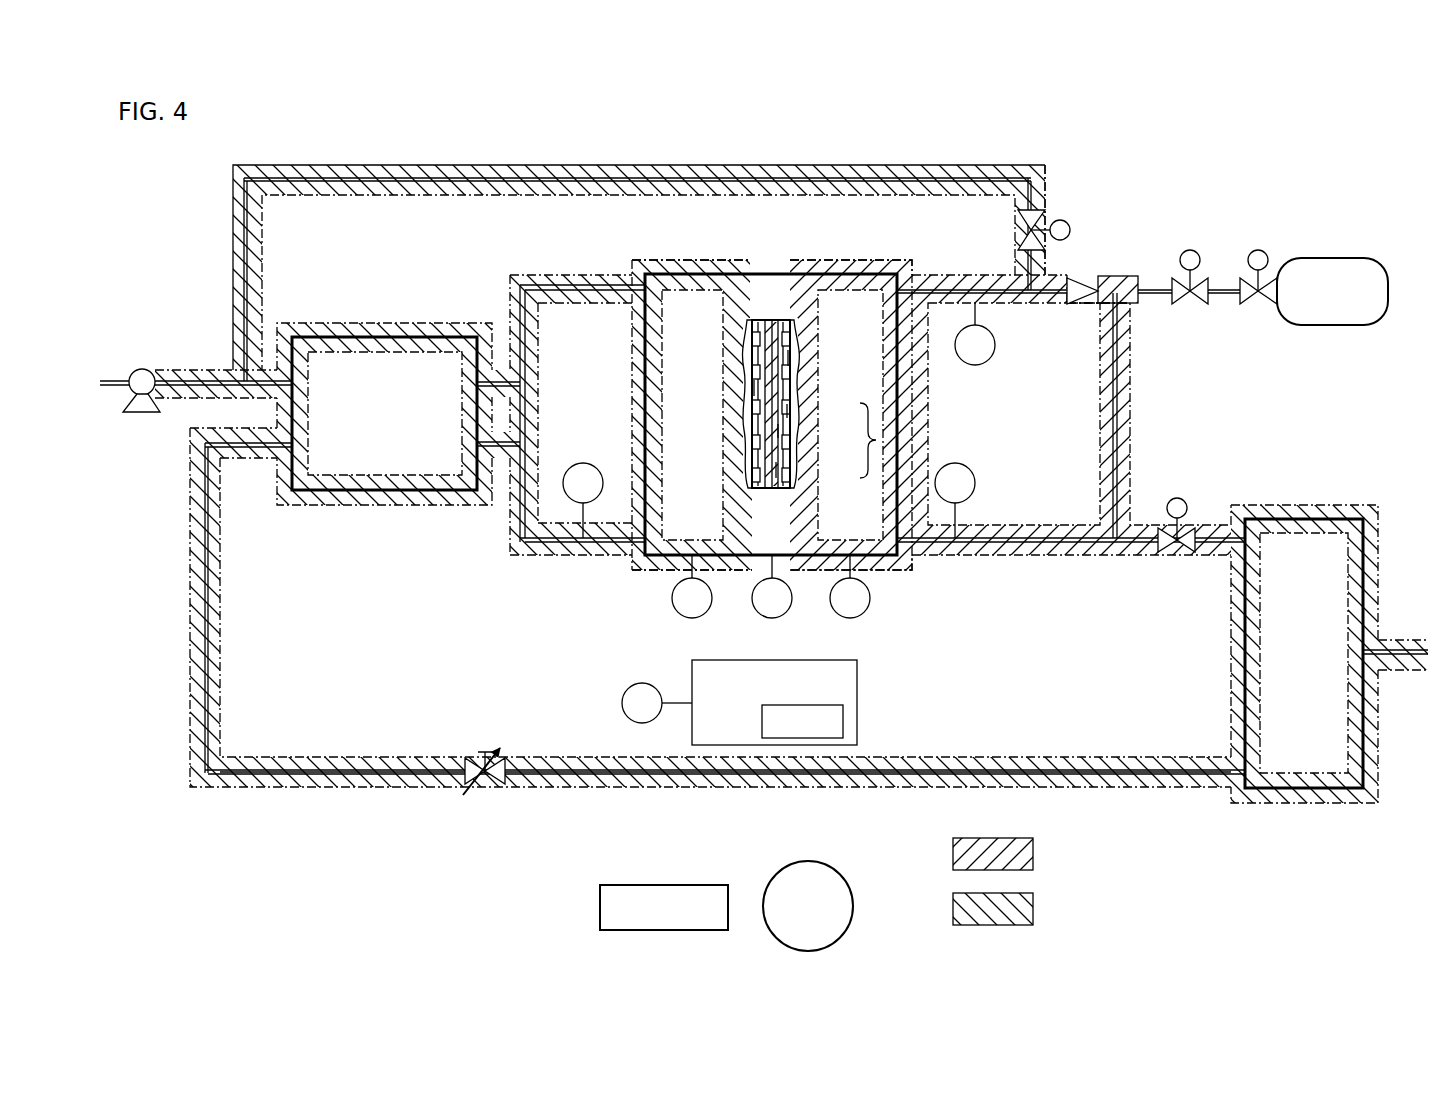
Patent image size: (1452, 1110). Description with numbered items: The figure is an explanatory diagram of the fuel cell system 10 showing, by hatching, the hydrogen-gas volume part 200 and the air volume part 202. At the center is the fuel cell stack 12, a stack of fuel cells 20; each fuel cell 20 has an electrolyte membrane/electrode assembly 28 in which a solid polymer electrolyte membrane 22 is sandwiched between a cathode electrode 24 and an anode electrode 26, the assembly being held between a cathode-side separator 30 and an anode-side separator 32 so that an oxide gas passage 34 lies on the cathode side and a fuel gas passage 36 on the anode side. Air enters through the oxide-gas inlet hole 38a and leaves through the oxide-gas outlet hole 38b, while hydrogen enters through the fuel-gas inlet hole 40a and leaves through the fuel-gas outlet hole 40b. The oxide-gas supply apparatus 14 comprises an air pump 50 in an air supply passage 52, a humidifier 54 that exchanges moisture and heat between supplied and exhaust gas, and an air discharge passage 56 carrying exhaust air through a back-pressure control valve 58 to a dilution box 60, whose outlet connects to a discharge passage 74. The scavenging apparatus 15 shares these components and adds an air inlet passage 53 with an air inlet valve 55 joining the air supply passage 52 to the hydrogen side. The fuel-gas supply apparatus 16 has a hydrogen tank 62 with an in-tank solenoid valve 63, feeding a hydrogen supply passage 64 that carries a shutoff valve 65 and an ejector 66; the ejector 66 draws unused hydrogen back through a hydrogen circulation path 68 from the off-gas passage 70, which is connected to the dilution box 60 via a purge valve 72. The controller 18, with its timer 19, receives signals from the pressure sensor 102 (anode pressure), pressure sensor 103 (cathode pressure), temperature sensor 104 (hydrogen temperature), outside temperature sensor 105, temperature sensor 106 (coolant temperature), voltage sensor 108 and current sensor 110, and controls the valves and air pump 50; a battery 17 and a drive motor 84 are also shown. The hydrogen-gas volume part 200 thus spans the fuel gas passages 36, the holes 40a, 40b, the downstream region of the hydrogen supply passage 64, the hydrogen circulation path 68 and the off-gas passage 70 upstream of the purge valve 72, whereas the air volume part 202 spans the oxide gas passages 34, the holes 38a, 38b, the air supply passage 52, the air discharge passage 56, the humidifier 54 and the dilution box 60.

The fuel cell system 10 is at (203, 157).
The fuel cell stack 12 is at (856, 248).
The oxide-gas supply apparatus 14 is at (319, 302).
The scavenging apparatus 15 is at (1056, 198).
The fuel-gas supply apparatus 16 is at (1259, 276).
The battery 17 is at (706, 885).
The controller 18 is at (807, 702).
The timer 19 is at (843, 712).
The fuel cell 20 is at (820, 289).
The solid polymer electrolyte membrane 22 is at (780, 431).
The cathode electrode 24 is at (787, 410).
The anode electrode 26 is at (778, 469).
The electrolyte membrane/electrode assembly 28 is at (772, 310).
The cathode-side separator 30 is at (748, 310).
The anode-side separator 32 is at (795, 310).
The oxide gas passage 34 is at (750, 390).
The fuel gas passage 36 is at (792, 358).
The oxide-gas inlet hole 38a is at (631, 268).
The oxide-gas outlet hole 38b is at (640, 548).
The fuel-gas inlet hole 40a is at (900, 294).
The fuel-gas outlet hole 40b is at (908, 552).
The air pump 50 is at (137, 370).
The air supply passage 52 is at (184, 380).
The air inlet passage 53 is at (498, 178).
The humidifier 54 is at (470, 334).
The air inlet valve 55 is at (1070, 226).
The air discharge passage 56 is at (282, 769).
The back-pressure control valve 58 is at (486, 788).
The dilution box 60 is at (1350, 518).
The hydrogen tank 62 is at (1338, 258).
The in-tank solenoid valve 63 is at (1258, 250).
The hydrogen supply passage 64 is at (1156, 288).
The shutoff valve 65 is at (1191, 250).
The ejector 66 is at (1137, 304).
The hydrogen circulation path 68 is at (1116, 384).
The off-gas passage 70 is at (1221, 524).
The purge valve 72 is at (1177, 496).
The discharge passage 74 is at (1400, 650).
The drive motor 84 is at (844, 872).
The pressure sensor 102 is at (990, 358).
The pressure sensor 103 is at (569, 466).
The temperature sensor 104 is at (964, 464).
The outside temperature sensor 105 is at (628, 688).
The temperature sensor 106 is at (836, 612).
The voltage sensor 108 is at (756, 612).
The current sensor 110 is at (680, 616).
The hydrogen-gas volume part 200 is at (993, 268).
The air volume part 202 is at (222, 603).